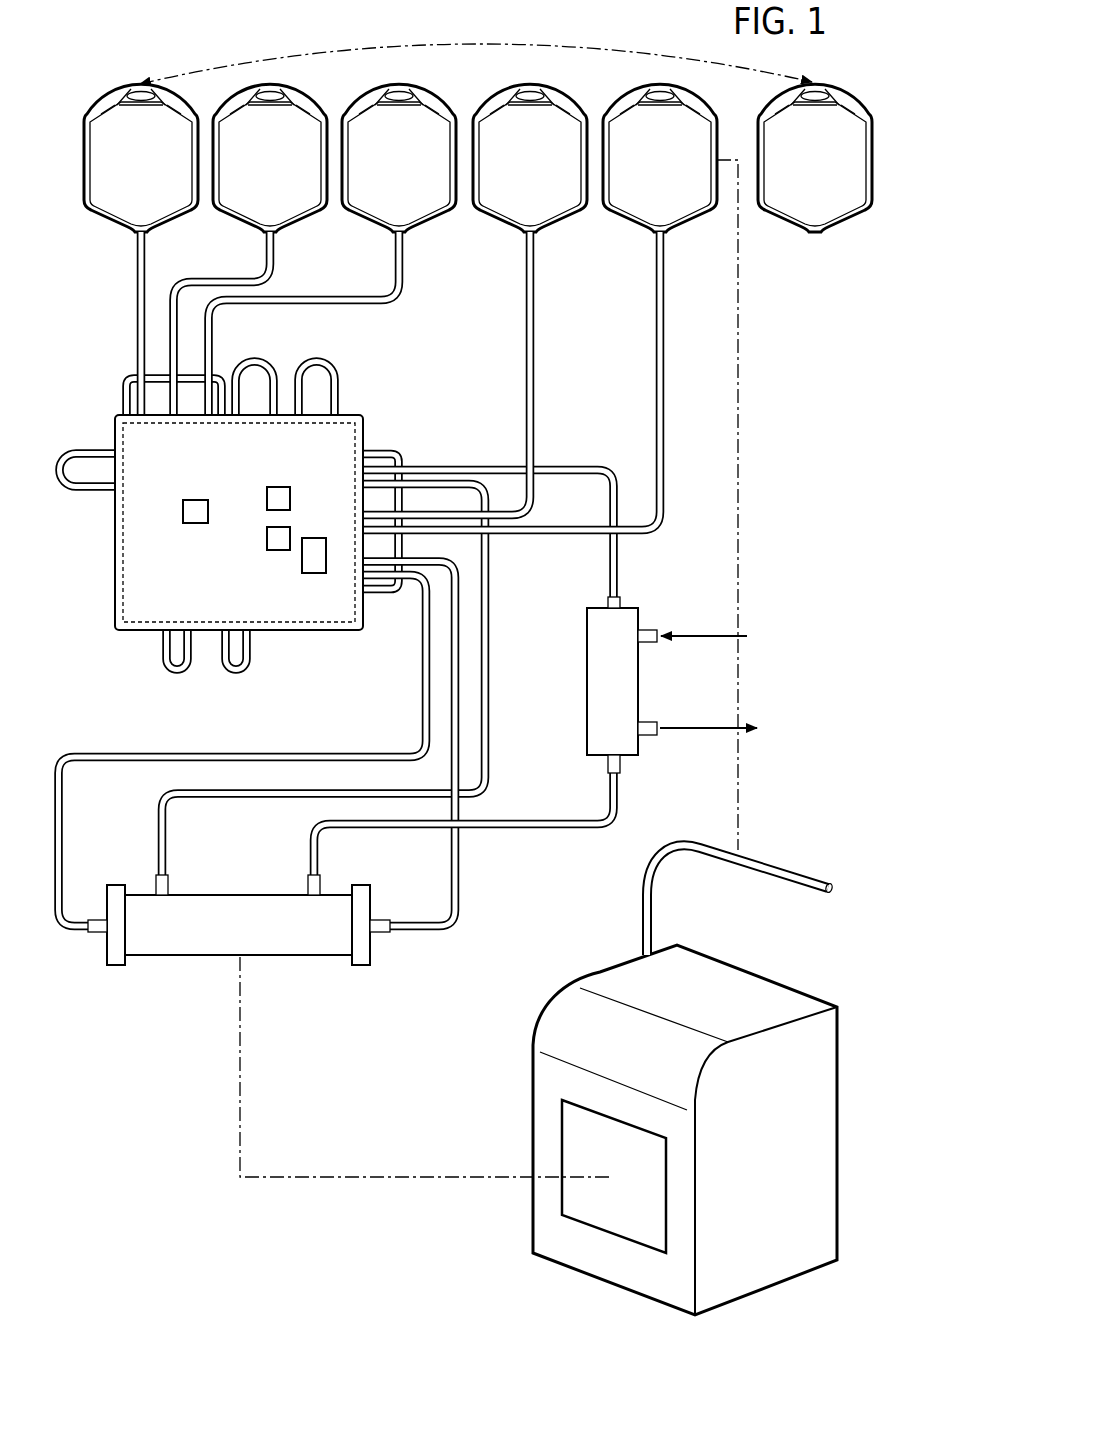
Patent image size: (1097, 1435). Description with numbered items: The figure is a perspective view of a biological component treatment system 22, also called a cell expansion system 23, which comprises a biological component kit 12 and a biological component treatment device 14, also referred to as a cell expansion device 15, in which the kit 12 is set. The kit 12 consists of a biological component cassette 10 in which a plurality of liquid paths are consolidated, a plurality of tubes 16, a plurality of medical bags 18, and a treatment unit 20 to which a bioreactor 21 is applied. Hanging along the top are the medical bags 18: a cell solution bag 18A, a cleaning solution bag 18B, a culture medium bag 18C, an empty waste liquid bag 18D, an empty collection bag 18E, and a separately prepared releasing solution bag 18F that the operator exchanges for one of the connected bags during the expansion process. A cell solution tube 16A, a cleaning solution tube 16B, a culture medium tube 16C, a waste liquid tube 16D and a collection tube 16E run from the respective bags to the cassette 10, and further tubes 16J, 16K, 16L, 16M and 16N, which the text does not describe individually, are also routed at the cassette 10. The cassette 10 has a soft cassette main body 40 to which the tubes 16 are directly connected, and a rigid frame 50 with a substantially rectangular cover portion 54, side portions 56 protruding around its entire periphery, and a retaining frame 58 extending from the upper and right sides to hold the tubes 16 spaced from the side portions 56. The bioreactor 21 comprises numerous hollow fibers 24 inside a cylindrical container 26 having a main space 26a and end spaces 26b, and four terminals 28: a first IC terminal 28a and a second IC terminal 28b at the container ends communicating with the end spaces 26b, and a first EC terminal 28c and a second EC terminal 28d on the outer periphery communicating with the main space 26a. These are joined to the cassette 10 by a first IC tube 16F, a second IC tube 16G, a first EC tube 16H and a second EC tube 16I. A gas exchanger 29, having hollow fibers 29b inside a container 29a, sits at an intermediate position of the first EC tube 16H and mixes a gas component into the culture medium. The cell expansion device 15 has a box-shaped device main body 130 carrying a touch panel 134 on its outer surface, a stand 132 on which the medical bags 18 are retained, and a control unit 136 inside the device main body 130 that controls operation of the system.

The biological component cassette 10 is at (348, 688).
The biological component kit 12 is at (106, 70).
The biological component treatment device 14 is at (538, 1065).
The cell expansion device 15 is at (523, 1222).
The tubes 16 is at (120, 306).
The cell solution tube 16A is at (137, 262).
The cleaning solution tube 16B is at (266, 262).
The culture medium tube 16C is at (395, 262).
The waste liquid tube 16D is at (526, 262).
The collection tube 16E is at (656, 262).
The first IC tube 16F is at (92, 752).
The second IC tube 16G is at (460, 884).
The first EC tube 16H is at (530, 820).
The second EC tube 16I is at (158, 806).
The tube 16J is at (85, 450).
The tube 16K is at (255, 360).
The tube 16L is at (317, 360).
The tube 16M is at (237, 676).
The tube 16N is at (178, 676).
The medical bags 18 is at (73, 124).
The cell solution bag 18A is at (128, 86).
The cleaning solution bag 18B is at (315, 106).
The culture medium bag 18C is at (446, 106).
The waste liquid bag 18D is at (574, 106).
The collection bag 18E is at (716, 113).
The releasing solution bag 18F is at (845, 98).
The treatment unit 20 is at (274, 958).
The bioreactor 21 is at (266, 968).
The biological component treatment system 22 is at (780, 505).
The cell expansion system 23 is at (836, 466).
The hollow fibers 24 is at (250, 907).
The cylindrical container 26 is at (173, 958).
The main space 26a is at (220, 940).
The end spaces 26b is at (117, 935).
The terminals 28 is at (274, 958).
The first IC terminal 28a is at (98, 934).
The second IC terminal 28b is at (387, 934).
The first EC terminal 28c is at (322, 878).
The second EC terminal 28d is at (154, 886).
The gas exchanger 29 is at (647, 605).
The container 29a is at (587, 636).
The hollow fibers 29b is at (603, 697).
The cassette main body 40 is at (286, 628).
The frame 50 is at (326, 632).
The cover portion 54 is at (147, 573).
The side portions 56 is at (115, 540).
The retaining frame 58 is at (123, 384).
The device main body 130 is at (598, 975).
The stand 132 is at (787, 875).
The touch panel 134 is at (580, 1133).
The control unit 136 is at (737, 995).